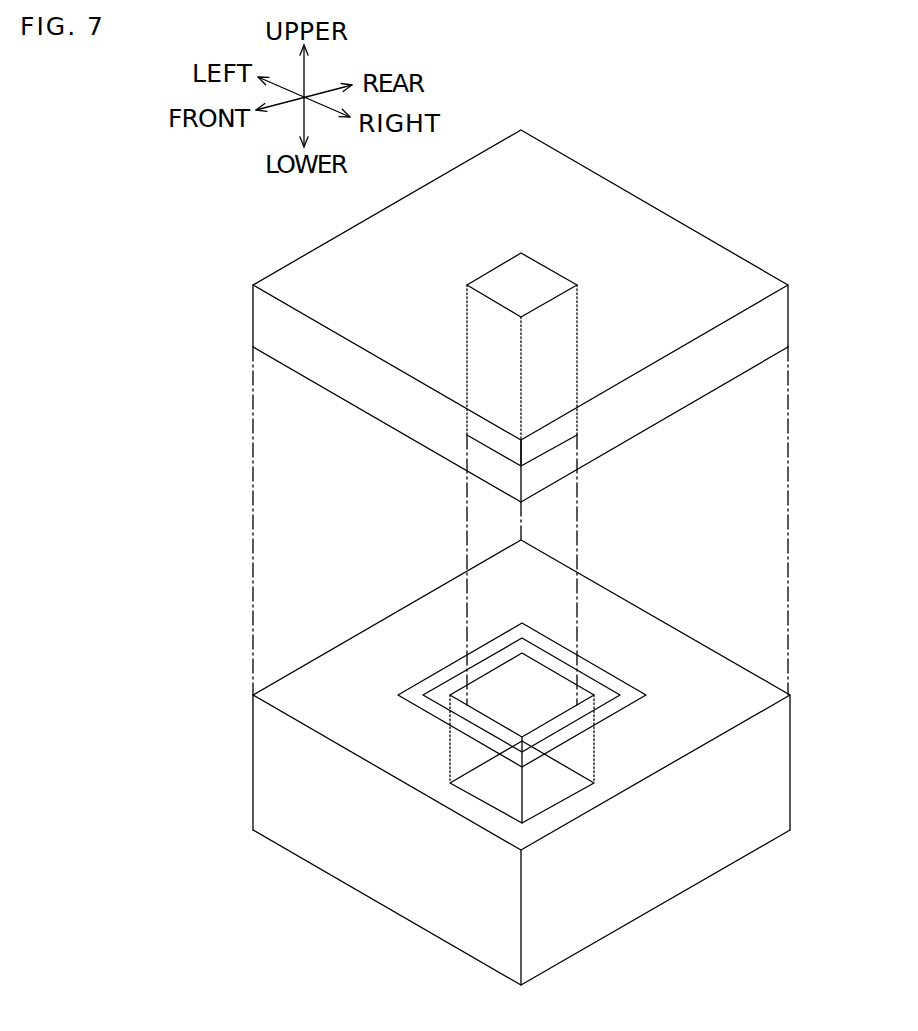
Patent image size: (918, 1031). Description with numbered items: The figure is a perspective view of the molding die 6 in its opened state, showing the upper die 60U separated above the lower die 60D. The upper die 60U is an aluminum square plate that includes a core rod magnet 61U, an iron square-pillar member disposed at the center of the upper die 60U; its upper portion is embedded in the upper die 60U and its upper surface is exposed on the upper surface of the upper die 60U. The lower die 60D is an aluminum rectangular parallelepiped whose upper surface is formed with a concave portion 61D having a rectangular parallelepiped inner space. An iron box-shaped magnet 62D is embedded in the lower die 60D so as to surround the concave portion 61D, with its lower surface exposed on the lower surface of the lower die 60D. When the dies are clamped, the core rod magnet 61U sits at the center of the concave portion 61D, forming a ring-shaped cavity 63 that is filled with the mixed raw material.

The molding die 6 is at (733, 138).
The upper die 60U is at (725, 273).
The core rod magnet 61U is at (547, 283).
The lower die 60D is at (710, 843).
The box-shaped magnet 62D is at (433, 683).
The concave portion 61D is at (558, 680).
The cavity 63 is at (452, 755).